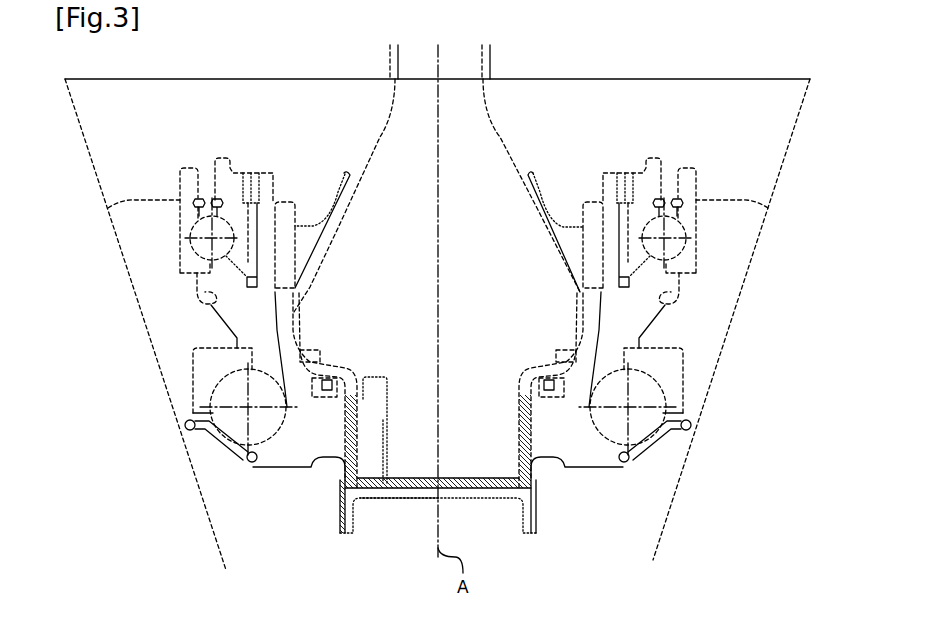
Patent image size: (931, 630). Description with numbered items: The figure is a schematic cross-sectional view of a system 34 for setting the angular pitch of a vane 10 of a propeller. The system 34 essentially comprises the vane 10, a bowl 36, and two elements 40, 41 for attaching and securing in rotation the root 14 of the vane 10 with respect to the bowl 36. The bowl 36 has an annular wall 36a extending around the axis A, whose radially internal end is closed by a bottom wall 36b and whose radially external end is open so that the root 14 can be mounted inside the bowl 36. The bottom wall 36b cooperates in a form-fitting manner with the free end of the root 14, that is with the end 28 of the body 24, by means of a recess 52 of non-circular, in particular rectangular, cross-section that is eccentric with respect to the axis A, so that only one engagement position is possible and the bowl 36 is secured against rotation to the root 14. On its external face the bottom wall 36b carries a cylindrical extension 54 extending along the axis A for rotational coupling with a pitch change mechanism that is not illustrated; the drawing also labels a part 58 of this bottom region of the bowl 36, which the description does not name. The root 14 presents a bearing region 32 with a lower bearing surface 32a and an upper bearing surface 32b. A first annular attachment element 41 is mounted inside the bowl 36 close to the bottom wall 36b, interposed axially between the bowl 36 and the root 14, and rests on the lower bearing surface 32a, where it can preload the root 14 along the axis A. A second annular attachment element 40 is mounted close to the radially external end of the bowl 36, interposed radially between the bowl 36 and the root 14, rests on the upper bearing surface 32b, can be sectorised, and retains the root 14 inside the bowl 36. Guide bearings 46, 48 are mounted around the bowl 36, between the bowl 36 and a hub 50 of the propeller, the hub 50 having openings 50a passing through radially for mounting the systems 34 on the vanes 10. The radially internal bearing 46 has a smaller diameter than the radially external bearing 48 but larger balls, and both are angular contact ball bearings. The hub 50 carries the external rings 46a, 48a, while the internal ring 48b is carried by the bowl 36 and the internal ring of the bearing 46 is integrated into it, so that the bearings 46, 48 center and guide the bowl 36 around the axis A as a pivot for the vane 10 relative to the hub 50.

The vane 10 is at (512, 109).
The root 14 is at (368, 140).
The body 24 is at (493, 163).
The end 28 is at (410, 470).
The bearing surface 32 is at (438, 388).
The lower bearing surface 32a is at (538, 352).
The upper bearing surface 32b is at (547, 230).
The system for setting the angular pitch 34 is at (268, 123).
The bowl 36 is at (585, 478).
The annular wall 36a is at (600, 323).
The bottom wall 36b is at (500, 500).
The second annular attachment element 40 is at (554, 185).
The first annular attachment element 41 is at (364, 370).
The radially internal bearing 46 is at (662, 450).
The external ring 46a is at (202, 390).
The radially external bearing 48 is at (713, 169).
The external ring 48a is at (182, 185).
The internal ring 48b is at (213, 163).
The hub 50 is at (747, 212).
The opening 50a is at (200, 297).
The recess 52 is at (390, 433).
The cylindrical extension 54 is at (350, 535).
The plate wall 58 is at (340, 518).